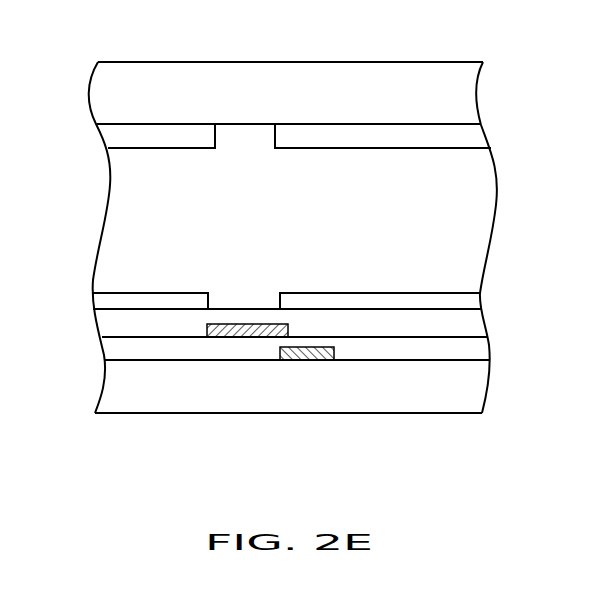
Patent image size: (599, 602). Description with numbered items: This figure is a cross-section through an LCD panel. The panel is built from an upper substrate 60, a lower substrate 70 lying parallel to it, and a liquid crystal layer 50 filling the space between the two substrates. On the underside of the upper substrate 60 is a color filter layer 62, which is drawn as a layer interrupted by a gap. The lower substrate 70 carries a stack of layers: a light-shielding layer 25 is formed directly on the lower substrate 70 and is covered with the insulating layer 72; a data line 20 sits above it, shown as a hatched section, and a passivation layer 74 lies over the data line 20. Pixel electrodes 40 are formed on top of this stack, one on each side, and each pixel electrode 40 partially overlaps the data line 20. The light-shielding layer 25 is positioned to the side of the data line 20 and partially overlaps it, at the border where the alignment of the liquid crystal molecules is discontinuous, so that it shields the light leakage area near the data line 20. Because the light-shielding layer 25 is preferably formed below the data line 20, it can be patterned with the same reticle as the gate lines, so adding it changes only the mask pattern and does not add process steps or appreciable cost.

The upper substrate 60 is at (413, 73).
The color filter layer 62 is at (473, 128).
The liquid crystal layer 50 is at (127, 190).
The pixel electrode 40 is at (136, 302).
The passivation layer 74 is at (468, 328).
The insulating layer 72 is at (472, 350).
The lower substrate 70 is at (455, 398).
The data line 20 is at (253, 322).
The light-shielding layer 25 is at (316, 349).